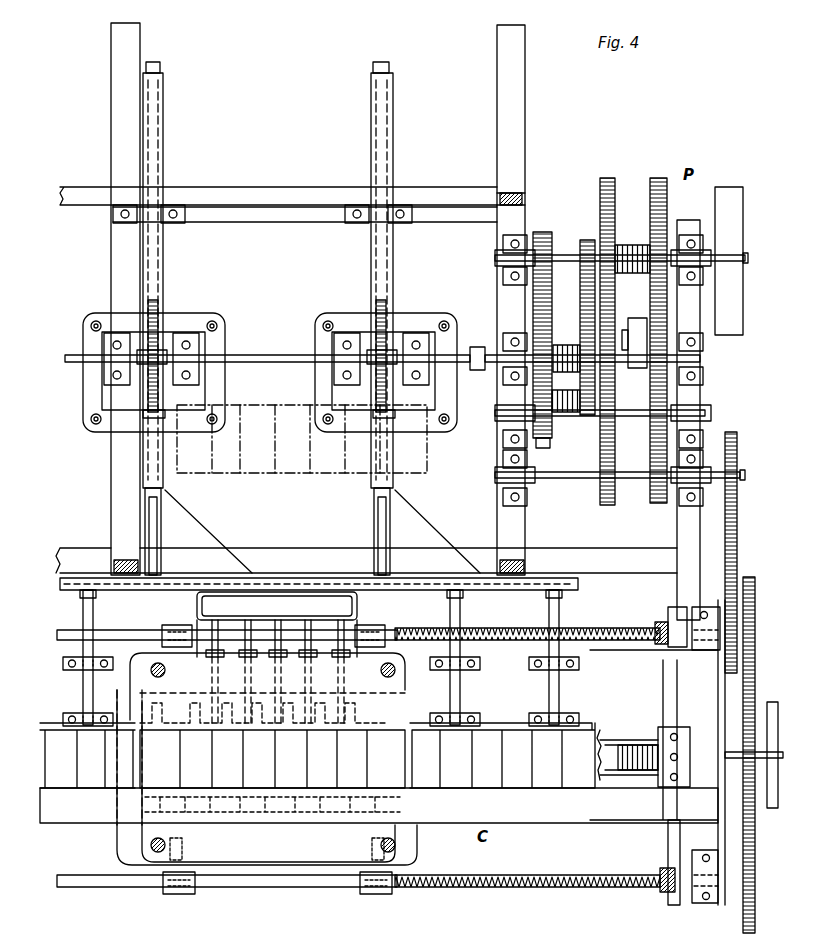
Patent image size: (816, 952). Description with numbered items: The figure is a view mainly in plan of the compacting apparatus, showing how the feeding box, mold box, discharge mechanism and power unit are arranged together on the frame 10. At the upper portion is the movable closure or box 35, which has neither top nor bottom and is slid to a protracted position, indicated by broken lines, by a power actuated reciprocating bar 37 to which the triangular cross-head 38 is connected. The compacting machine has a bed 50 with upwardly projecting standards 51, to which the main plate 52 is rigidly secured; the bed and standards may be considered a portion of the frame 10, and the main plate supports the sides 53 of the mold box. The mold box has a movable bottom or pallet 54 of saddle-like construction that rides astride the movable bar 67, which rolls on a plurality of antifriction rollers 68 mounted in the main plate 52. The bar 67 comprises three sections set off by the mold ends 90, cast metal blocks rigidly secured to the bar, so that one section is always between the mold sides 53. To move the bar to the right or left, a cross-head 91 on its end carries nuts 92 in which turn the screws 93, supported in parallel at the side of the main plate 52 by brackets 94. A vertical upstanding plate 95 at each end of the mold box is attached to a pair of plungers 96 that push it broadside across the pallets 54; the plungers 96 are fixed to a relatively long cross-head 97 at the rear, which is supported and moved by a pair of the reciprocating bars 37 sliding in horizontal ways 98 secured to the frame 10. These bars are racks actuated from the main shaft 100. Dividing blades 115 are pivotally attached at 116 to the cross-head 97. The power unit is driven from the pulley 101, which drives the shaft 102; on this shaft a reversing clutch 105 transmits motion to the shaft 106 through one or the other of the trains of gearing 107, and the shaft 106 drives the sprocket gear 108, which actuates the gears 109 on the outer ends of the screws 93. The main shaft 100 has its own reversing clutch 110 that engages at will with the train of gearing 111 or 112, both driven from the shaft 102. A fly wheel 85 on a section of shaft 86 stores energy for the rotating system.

The frame 10 is at (489, 187).
The movable closure or box 35 is at (266, 472).
The reciprocating bar 37 is at (160, 68).
The triangular cross-head 38 is at (164, 312).
The bed 50 is at (120, 856).
The standards 51 is at (166, 670).
The main plate 52 is at (144, 836).
The mold sides 53 is at (173, 791).
The pallet 54 is at (228, 766).
The movable bar 67 is at (614, 780).
The antifriction rollers 68 is at (646, 782).
The fly wheel 85 is at (771, 702).
The shaft section 86 is at (781, 754).
The mold ends 90 is at (164, 766).
The cross-head 91 is at (668, 842).
The nuts 92 is at (670, 622).
The screws 93 is at (604, 630).
The brackets 94 is at (176, 896).
The vertical upstanding plate 95 is at (42, 726).
The plungers 96 is at (84, 610).
The cross-head 97 is at (360, 586).
The horizontal ways 98 is at (163, 132).
The main shaft 100 is at (256, 360).
The pulley 101 is at (734, 188).
The shaft 102 is at (556, 252).
The reversing clutch 105 is at (630, 246).
The shaft 106 is at (571, 480).
The trains of gearing 107 is at (651, 184).
The sprocket gear 108 is at (738, 454).
The gears 109 is at (754, 594).
The reversing clutch 110 is at (563, 344).
The train of gearing 111 is at (543, 444).
The train of gearing 112 is at (578, 403).
The dividing blades 115 is at (338, 694).
The pivot attachment 116 is at (282, 624).